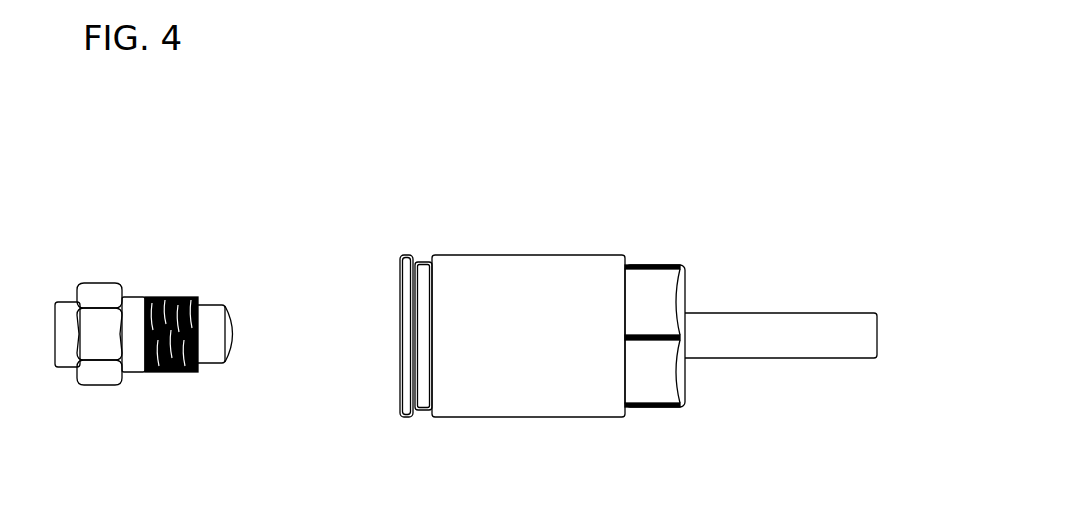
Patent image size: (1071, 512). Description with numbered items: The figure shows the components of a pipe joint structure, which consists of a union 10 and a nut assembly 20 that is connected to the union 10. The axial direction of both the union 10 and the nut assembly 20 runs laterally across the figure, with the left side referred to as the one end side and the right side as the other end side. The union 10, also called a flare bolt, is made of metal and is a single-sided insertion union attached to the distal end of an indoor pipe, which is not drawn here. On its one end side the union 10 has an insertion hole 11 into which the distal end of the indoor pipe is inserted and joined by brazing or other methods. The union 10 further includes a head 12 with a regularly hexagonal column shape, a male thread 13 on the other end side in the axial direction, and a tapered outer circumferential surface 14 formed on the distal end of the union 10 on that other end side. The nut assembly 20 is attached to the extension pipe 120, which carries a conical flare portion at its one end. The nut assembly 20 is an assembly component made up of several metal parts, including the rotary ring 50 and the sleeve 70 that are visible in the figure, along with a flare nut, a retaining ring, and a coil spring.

The union 10 is at (138, 375).
The insertion hole 11 is at (47, 323).
The head 12 is at (100, 290).
The male thread 13 is at (168, 300).
The tapered outer circumferential surface 14 is at (232, 310).
The nut assembly 20 is at (542, 354).
The rotary ring 50 is at (647, 285).
The sleeve 70 is at (515, 268).
The extension pipe 120 is at (775, 360).